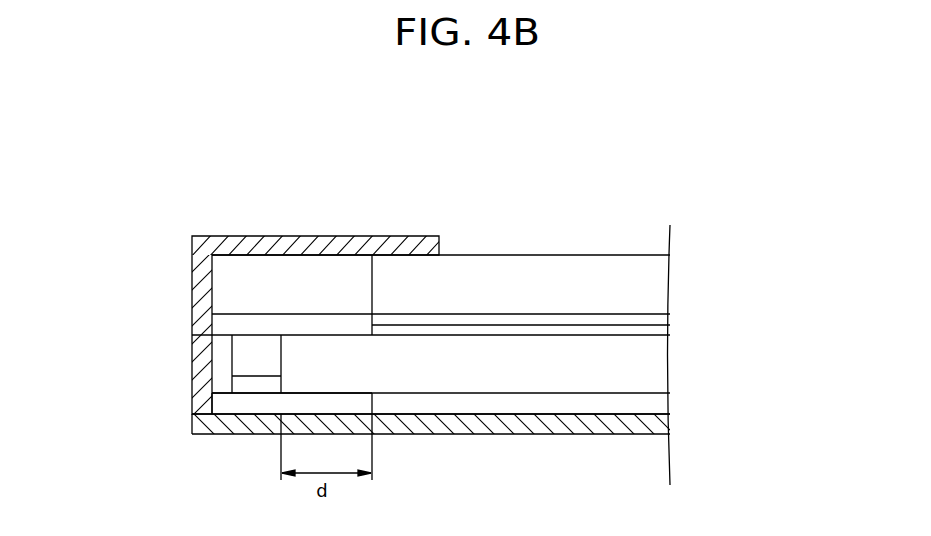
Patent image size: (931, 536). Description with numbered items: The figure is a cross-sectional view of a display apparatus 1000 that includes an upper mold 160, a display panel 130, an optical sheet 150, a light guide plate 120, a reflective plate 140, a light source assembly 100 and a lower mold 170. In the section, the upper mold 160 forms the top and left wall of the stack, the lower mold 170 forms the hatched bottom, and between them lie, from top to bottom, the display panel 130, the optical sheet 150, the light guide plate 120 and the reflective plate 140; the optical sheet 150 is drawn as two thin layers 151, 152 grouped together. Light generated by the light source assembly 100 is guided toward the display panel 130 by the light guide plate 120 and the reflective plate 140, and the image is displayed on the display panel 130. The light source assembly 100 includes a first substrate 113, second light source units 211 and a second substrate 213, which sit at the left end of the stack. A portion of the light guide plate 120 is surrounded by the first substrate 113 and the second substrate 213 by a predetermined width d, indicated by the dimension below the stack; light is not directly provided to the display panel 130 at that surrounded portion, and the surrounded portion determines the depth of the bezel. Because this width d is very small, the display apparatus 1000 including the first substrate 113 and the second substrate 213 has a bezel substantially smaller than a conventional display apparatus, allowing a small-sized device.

The display apparatus 1000 is at (508, 195).
The light source assembly 100 is at (225, 364).
The first substrate 113 is at (219, 321).
The second light source units 211 is at (245, 360).
The second substrate 213 is at (249, 405).
The upper mold 160 is at (199, 275).
The display panel 130 is at (660, 282).
The optical sheet 150 is at (586, 332).
The first layer 151 is at (662, 318).
The second layer 152 is at (662, 329).
The light guide plate 120 is at (438, 364).
The reflective plate 140 is at (660, 400).
The lower mold 170 is at (660, 425).